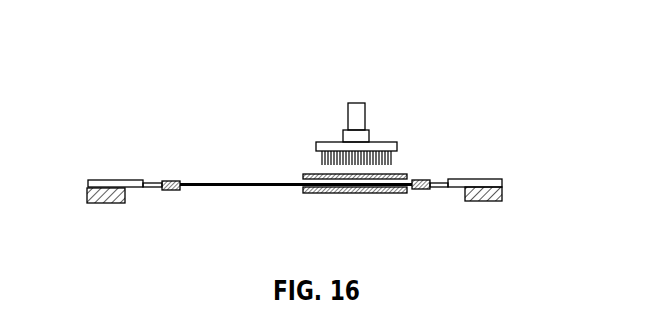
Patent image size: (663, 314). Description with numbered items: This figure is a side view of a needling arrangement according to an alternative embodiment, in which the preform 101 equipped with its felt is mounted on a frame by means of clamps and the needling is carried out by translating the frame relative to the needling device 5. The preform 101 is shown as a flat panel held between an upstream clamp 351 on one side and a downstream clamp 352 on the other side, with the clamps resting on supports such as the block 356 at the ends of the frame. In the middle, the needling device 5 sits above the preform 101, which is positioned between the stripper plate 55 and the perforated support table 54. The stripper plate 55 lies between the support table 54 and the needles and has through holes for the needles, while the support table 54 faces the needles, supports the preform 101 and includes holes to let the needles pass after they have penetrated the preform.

The needling device 5 is at (385, 141).
The perforated support table 54 is at (368, 194).
The stripper plate 55 is at (305, 173).
The preform 101 is at (255, 187).
The upstream clamp 351 is at (430, 179).
The downstream clamp 352 is at (175, 180).
The support base 356 is at (503, 192).